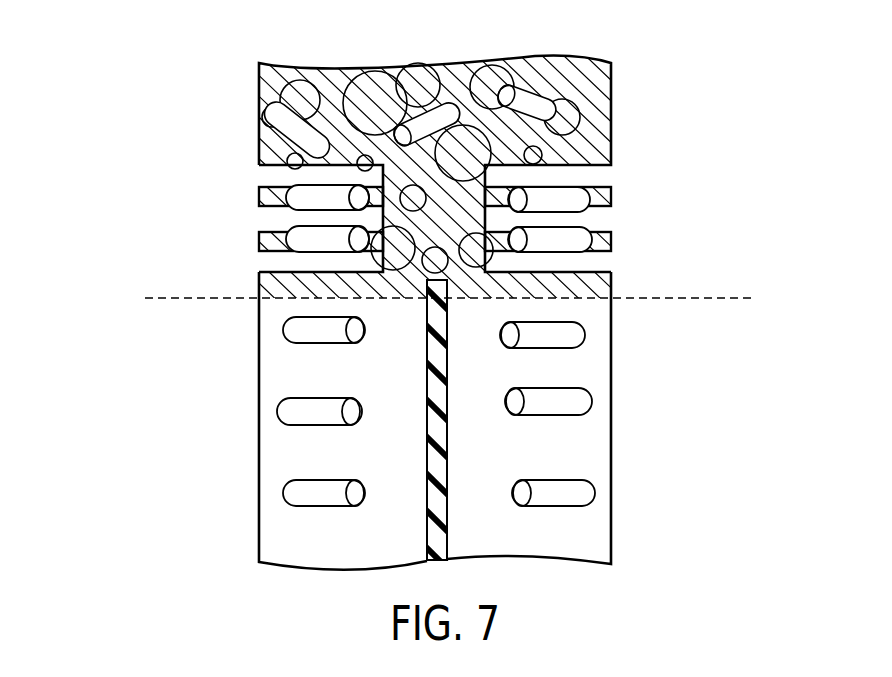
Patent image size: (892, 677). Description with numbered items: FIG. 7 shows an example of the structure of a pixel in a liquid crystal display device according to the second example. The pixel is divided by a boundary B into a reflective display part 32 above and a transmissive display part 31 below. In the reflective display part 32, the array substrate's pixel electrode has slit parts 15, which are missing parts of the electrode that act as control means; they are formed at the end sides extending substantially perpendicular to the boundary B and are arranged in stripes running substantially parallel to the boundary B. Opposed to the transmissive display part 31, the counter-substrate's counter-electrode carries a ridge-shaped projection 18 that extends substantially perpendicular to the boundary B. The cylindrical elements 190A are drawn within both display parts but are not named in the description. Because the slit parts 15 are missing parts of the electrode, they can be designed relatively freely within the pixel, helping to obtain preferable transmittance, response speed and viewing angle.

The fibers (cut fibers) 190A is at (312, 240).
The slit part 15 is at (260, 260).
The ridge-shaped projection 18 is at (447, 530).
The reflective display part 32 is at (727, 298).
The transmissive display part 31 is at (727, 298).
The boundary B is at (578, 300).